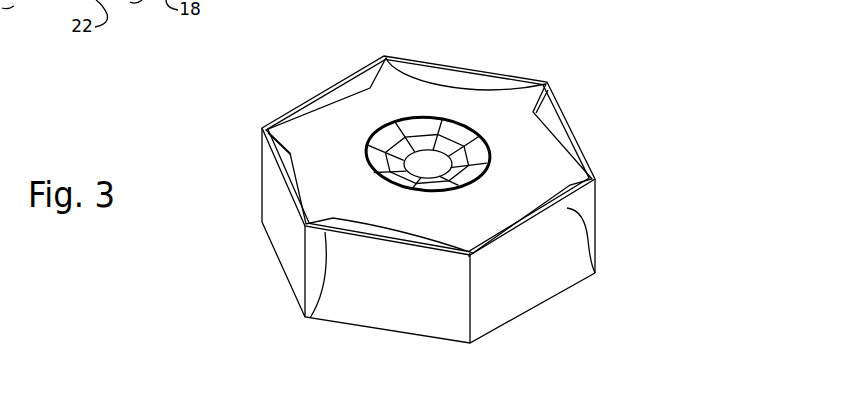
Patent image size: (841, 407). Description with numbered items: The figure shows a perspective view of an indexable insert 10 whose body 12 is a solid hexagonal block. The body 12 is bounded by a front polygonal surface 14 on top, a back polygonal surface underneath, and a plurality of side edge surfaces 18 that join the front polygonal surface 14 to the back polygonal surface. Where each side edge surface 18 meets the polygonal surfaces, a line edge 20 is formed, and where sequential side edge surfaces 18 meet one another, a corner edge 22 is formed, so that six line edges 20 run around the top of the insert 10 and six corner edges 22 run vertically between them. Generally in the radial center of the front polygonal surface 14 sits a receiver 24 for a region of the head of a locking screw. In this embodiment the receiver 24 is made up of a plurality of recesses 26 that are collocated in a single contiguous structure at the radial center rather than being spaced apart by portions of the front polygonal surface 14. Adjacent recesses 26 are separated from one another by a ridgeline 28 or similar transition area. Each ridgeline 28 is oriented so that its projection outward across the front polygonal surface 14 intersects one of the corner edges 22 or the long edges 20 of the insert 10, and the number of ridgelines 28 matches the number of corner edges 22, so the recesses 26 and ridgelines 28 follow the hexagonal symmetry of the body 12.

The indexable insert 10 is at (610, 25).
The body 12 is at (320, 133).
The front polygonal surface 14 is at (519, 166).
The side edge surfaces 18 is at (504, 306).
The line edges 20 is at (318, 92).
The corner edges 22 is at (597, 234).
The receiver 24 is at (440, 144).
The recesses 26 is at (487, 148).
The ridgeline 28 is at (410, 143).